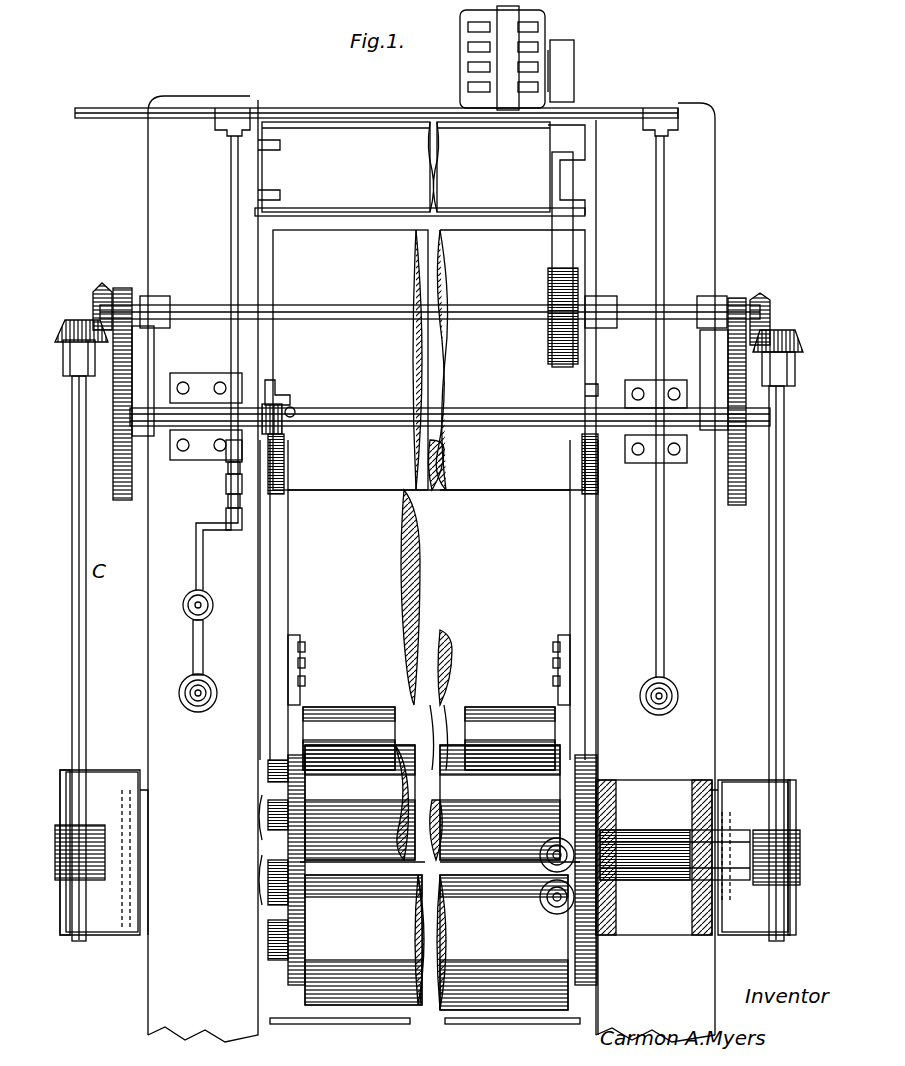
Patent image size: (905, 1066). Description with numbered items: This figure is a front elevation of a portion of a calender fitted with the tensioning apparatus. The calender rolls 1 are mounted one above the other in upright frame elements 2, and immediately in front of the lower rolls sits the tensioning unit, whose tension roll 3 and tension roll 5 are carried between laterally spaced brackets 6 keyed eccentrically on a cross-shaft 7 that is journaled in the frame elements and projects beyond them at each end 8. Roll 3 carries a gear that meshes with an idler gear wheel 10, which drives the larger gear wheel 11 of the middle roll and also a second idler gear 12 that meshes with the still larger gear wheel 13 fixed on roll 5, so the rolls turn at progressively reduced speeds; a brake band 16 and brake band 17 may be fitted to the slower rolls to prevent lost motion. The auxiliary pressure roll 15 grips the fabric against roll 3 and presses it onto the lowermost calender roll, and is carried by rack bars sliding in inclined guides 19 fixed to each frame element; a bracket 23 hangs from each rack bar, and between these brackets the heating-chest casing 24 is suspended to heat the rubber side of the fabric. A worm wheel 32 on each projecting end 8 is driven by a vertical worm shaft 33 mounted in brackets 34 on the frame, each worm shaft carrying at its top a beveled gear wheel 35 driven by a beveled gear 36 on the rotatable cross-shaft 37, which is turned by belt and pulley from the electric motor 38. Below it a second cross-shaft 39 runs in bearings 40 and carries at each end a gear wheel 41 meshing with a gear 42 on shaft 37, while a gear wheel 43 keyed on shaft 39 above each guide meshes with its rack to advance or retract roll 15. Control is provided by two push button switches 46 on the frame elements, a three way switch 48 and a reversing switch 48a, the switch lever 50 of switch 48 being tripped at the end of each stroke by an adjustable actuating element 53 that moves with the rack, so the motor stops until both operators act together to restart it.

The calender rolls 1 is at (355, 1045).
The upright frame elements 2 is at (148, 625).
The tension roll 3 is at (456, 816).
The tension roll 5 is at (502, 942).
The brackets 6 is at (280, 908).
The cross-shaft 7 is at (425, 858).
The projecting ends of shaft 8 is at (100, 820).
The idler gear wheel 10 is at (280, 838).
The gear wheel 11 is at (280, 785).
The second idler gear 12 is at (320, 870).
The gear wheel 13 is at (290, 980).
The auxiliary tension or pressure roll 15 is at (405, 745).
The brake band 16 is at (572, 970).
The brake band 17 is at (565, 760).
The guides 19 is at (288, 538).
The bracket 23 is at (305, 672).
The casing 24 is at (495, 712).
The worm wheel 32 is at (82, 935).
The worm shaft 33 is at (86, 690).
The brackets 34 is at (140, 358).
The beveled gear wheel 35 is at (78, 315).
The beveled gear 36 is at (104, 283).
The rotatable cross-shaft 37 is at (484, 314).
The electric motor 38 is at (545, 30).
The second cross-shaft 39 is at (481, 415).
The bearings 40 is at (163, 445).
The gear wheel 41 is at (122, 500).
The gear 42 is at (128, 297).
The gear wheel 43 is at (280, 390).
The push button switches 46 is at (230, 672).
The three way switch 48 is at (230, 470).
The switch 48a is at (183, 603).
The switch lever 50 is at (285, 465).
The adjustable actuating element 53 is at (285, 438).